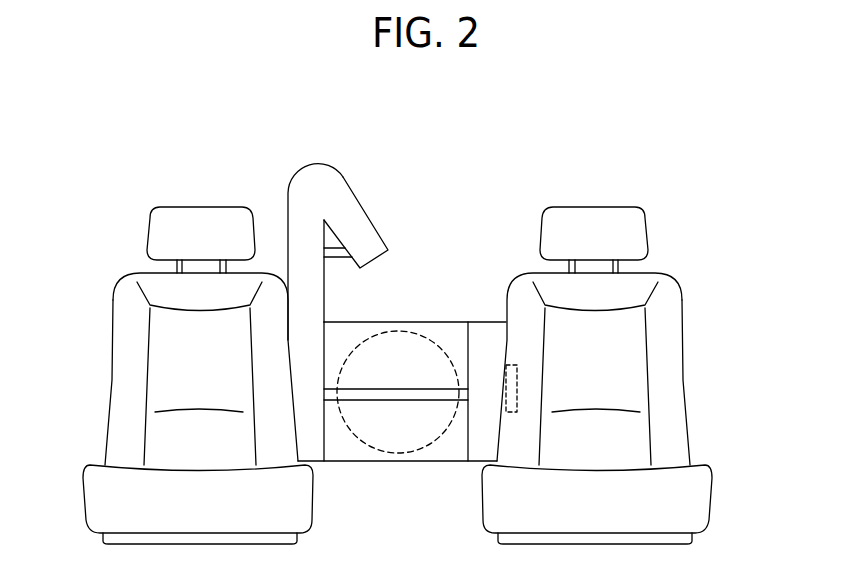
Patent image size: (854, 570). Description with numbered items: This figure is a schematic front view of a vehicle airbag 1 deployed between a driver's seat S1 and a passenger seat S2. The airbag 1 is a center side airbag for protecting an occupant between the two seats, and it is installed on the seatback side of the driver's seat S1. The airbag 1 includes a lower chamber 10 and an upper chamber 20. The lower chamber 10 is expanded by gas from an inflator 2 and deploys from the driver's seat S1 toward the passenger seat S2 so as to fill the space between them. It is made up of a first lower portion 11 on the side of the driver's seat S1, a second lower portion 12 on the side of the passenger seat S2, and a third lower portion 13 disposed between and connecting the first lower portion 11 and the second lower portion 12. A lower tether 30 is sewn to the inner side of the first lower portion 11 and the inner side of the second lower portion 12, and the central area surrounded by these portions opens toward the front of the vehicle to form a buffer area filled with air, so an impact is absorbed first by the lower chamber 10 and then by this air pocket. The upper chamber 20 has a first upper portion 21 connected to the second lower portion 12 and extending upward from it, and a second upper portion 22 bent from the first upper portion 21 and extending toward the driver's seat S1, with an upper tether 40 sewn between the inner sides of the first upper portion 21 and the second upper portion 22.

The vehicle airbag 1 is at (474, 124).
The inflator 2 is at (517, 377).
The lower chamber 10 is at (406, 481).
The first lower portion 11 is at (485, 340).
The second lower portion 12 is at (310, 432).
The third lower portion 13 is at (350, 450).
The upper chamber 20 is at (351, 159).
The first upper portion 21 is at (305, 233).
The second upper portion 22 is at (352, 225).
The lower tether 30 is at (434, 394).
The upper tether 40 is at (338, 252).
The driver's seat S1 is at (676, 431).
The passenger seat S2 is at (121, 431).